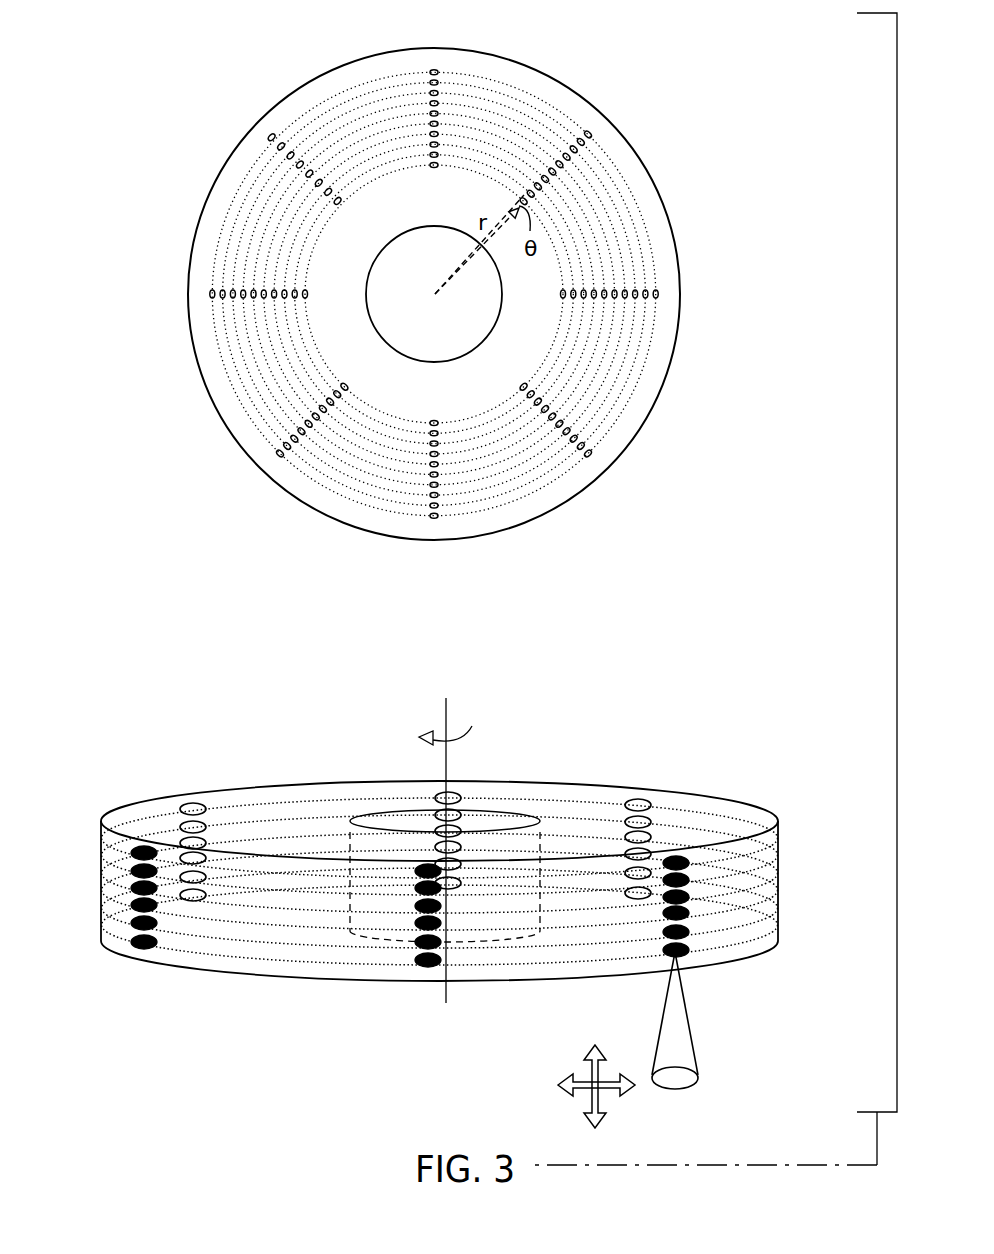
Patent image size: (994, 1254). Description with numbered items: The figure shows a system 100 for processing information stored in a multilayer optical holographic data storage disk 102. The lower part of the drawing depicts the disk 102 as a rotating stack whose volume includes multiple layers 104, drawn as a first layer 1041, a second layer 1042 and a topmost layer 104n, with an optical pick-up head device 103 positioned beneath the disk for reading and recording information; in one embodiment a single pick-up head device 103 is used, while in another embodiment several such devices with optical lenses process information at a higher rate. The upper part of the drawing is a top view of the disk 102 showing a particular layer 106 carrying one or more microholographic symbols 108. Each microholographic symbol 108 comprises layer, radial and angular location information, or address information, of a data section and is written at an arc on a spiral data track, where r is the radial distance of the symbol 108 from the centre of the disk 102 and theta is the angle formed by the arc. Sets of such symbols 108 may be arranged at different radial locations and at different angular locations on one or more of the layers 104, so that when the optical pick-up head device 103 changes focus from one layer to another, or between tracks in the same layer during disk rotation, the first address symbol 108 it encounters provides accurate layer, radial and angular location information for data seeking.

The system 100 is at (183, 696).
The multilayer optical holographic data storage disk 102 is at (155, 798).
The optical pick-up head device 103 is at (687, 1090).
The layers 104 is at (496, 907).
The layer N 104n is at (768, 840).
The second layer 1042 is at (768, 922).
The first layer 1041 is at (768, 937).
The particular layer 106 is at (570, 85).
The microholographic symbols 108 is at (660, 295).